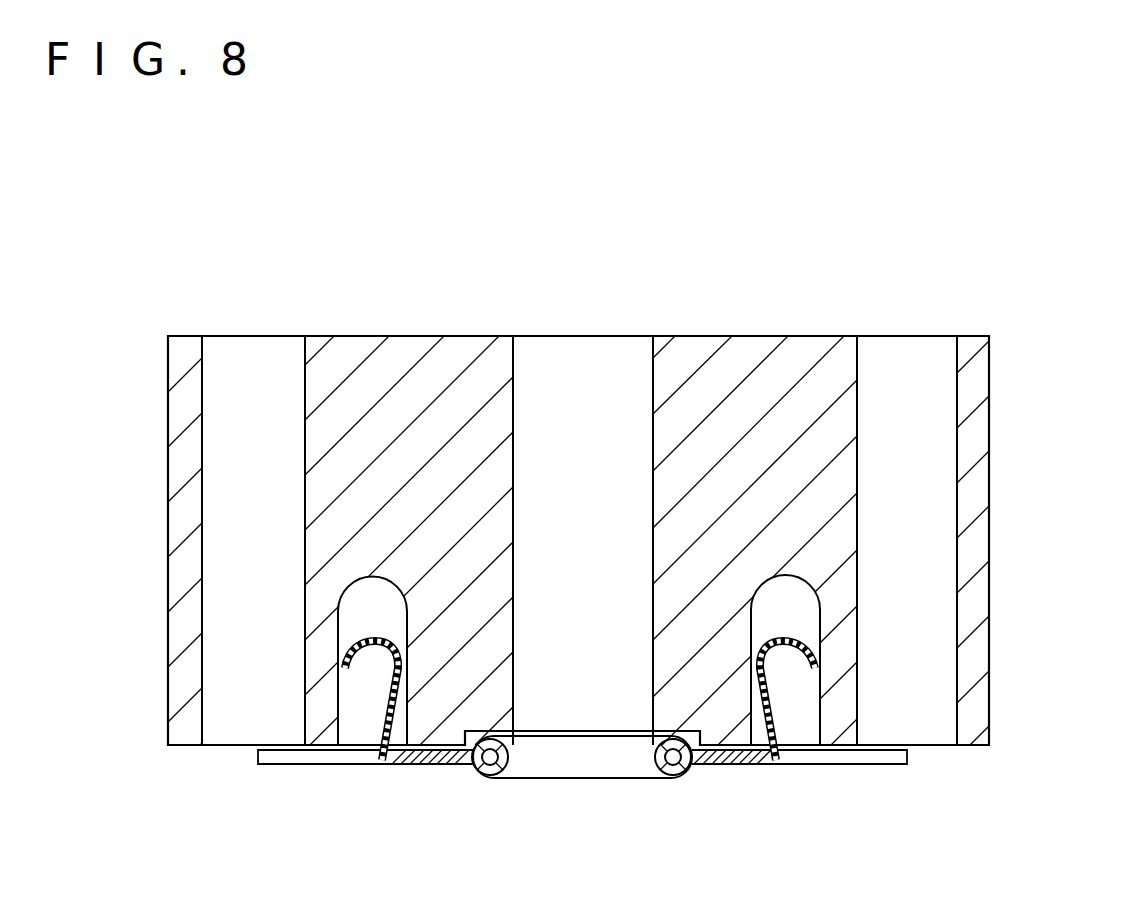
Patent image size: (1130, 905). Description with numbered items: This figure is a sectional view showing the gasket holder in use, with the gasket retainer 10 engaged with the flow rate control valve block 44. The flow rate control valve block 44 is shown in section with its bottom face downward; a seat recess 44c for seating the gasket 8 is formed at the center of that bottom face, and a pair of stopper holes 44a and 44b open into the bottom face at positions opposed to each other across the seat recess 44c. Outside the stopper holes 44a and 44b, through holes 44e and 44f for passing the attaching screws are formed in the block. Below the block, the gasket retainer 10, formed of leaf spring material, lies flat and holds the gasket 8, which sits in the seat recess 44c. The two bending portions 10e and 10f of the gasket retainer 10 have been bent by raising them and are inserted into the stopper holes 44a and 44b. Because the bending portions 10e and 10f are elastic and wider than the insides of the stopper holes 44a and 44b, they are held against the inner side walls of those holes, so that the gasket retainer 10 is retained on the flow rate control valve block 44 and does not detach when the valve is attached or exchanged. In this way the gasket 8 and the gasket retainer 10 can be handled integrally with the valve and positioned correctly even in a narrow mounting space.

The flow rate control valve block 44 is at (372, 356).
The stopper hole 44a is at (405, 610).
The stopper hole 44b is at (778, 594).
The seat recess 44c is at (514, 408).
The through hole 44e is at (202, 393).
The through hole 44f is at (857, 458).
The gasket retainer 10 is at (437, 795).
The bending portion 10e is at (395, 645).
The bending portion 10f is at (787, 641).
The gasket 8 is at (606, 768).